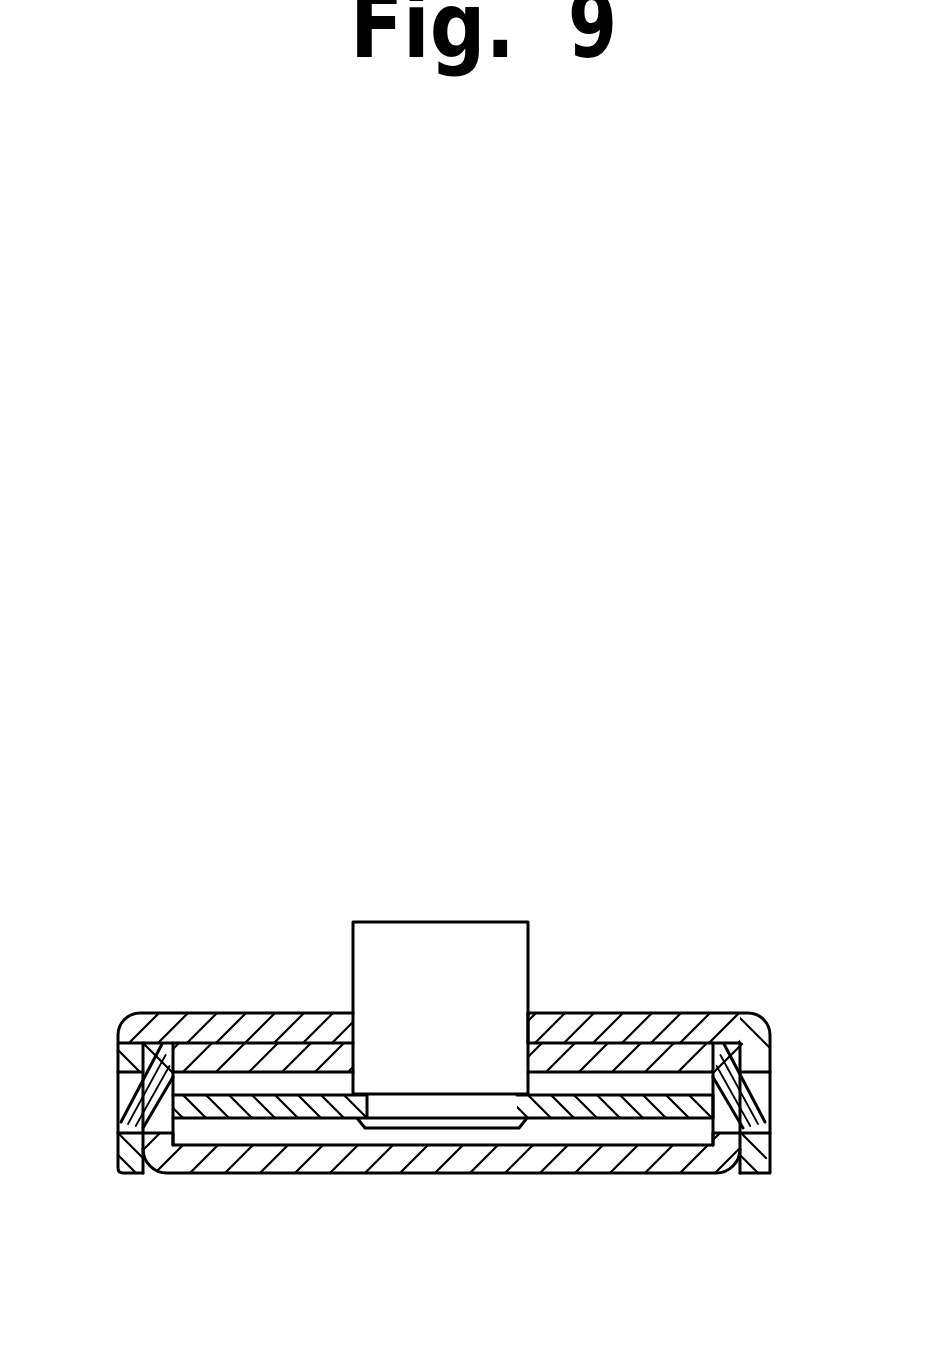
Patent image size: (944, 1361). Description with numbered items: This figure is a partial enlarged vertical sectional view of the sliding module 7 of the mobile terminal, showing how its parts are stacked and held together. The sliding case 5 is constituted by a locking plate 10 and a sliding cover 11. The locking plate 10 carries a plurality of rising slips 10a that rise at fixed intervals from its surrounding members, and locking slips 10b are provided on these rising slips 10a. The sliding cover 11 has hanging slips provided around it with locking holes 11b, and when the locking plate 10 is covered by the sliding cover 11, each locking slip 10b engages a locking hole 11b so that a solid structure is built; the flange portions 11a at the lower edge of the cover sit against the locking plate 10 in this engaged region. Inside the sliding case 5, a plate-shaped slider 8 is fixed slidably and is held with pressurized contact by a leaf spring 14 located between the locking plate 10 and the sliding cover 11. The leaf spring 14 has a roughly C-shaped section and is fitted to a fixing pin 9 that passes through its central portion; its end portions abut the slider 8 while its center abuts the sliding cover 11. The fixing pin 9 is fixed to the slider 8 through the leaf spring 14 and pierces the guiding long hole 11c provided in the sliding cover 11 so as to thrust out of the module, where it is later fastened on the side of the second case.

The sliding case 5 is at (299, 1175).
The sliding module 7 is at (621, 991).
The slider 8 is at (613, 1112).
The fixing pin 9 is at (457, 933).
The locking plate 10 is at (380, 1175).
The rising slip 10a is at (149, 1043).
The locking slip 10b is at (137, 1113).
The sliding cover 11 is at (278, 1013).
The engaging flange of cap 11a is at (135, 1160).
The locking hole 11b is at (119, 1072).
The guiding long hole 11c is at (527, 1028).
The leaf spring 14 is at (652, 1056).